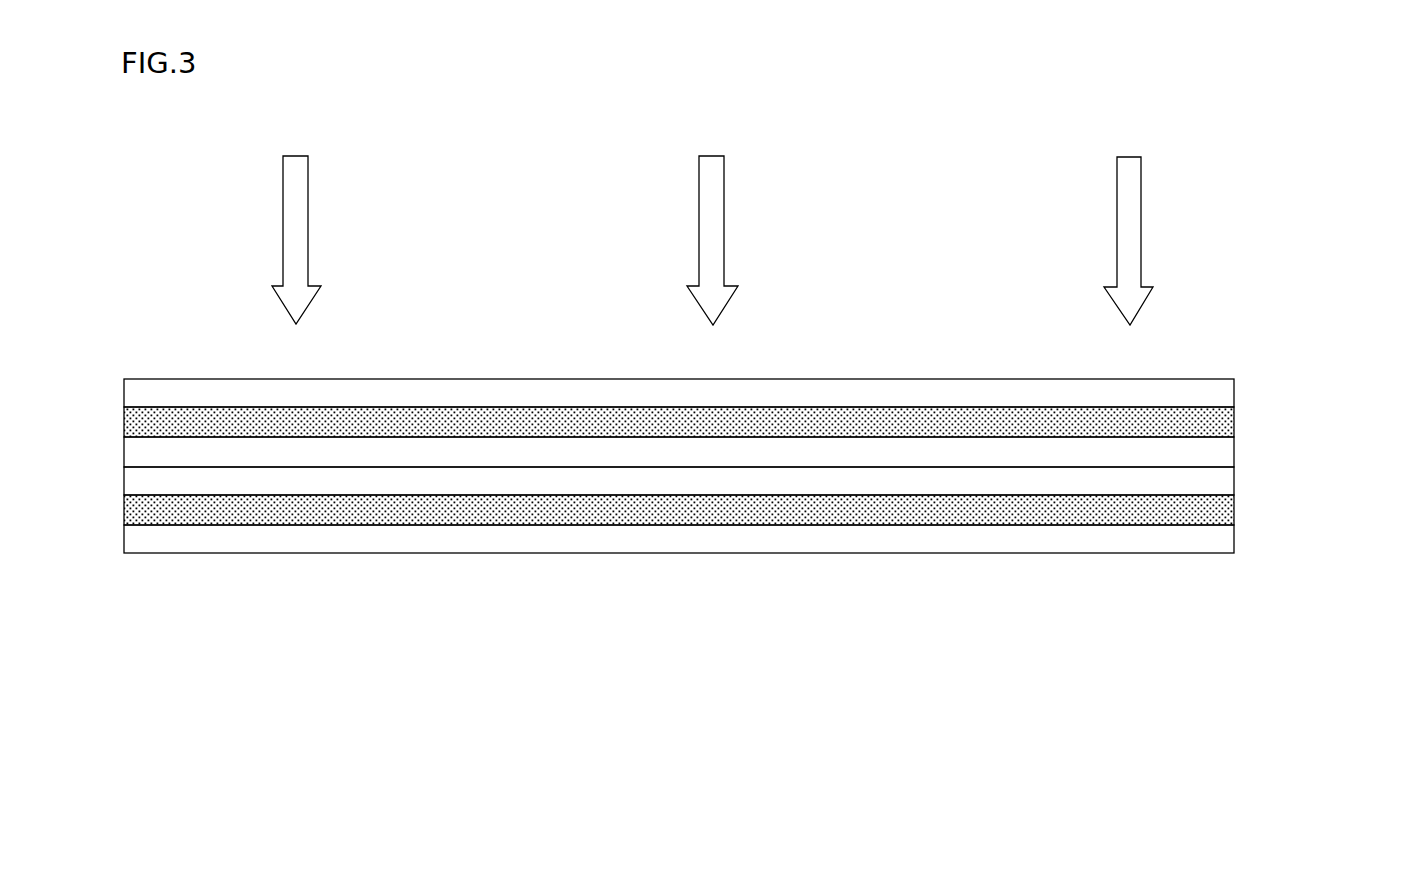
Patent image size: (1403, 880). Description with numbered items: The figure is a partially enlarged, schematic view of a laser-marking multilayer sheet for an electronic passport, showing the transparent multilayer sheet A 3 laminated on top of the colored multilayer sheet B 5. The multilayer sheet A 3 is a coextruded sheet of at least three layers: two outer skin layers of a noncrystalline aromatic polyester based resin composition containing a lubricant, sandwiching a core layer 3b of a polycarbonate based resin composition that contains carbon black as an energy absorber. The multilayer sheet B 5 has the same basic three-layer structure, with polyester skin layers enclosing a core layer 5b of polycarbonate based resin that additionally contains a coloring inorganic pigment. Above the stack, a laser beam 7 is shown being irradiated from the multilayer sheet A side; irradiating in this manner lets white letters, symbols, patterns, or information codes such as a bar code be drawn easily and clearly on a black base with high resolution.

The multilayer sheet A 3 is at (751, 417).
The core layer 3b is at (1232, 425).
The multilayer sheet B 5 is at (751, 517).
The core layer 5b is at (1232, 519).
The laser beam 7 is at (303, 205).